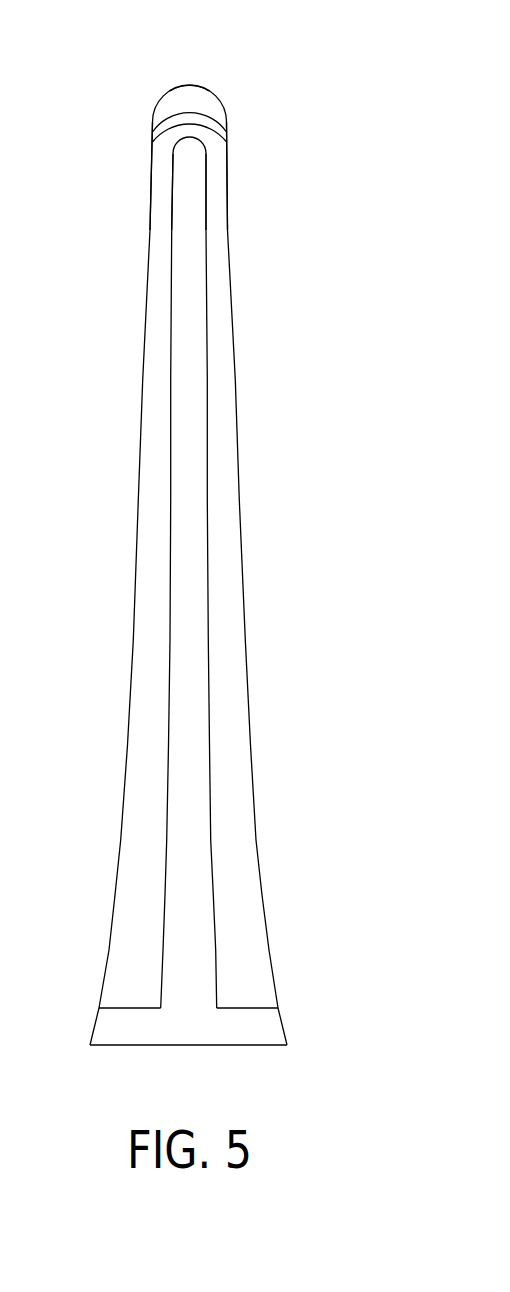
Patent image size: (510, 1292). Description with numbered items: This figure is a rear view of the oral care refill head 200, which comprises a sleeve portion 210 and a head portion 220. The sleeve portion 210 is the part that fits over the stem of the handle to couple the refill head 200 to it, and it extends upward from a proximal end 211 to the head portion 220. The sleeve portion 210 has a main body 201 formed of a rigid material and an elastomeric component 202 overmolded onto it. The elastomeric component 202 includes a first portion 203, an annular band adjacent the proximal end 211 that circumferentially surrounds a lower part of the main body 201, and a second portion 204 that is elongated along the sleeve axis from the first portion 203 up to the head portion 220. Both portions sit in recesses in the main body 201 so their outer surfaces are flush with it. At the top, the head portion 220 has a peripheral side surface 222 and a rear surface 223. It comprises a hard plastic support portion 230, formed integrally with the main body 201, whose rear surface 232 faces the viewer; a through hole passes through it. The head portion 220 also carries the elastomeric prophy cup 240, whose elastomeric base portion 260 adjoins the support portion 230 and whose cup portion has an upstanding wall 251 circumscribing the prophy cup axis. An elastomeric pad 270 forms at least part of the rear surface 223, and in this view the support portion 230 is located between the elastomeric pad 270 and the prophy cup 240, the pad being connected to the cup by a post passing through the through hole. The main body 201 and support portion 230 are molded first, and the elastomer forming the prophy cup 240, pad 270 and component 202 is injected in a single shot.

The oral care refill head 200 is at (318, 302).
The main body 201 is at (225, 640).
The elastomeric component 202 is at (195, 947).
The first portion 203 is at (255, 1029).
The second portion 204 is at (188, 412).
The sleeve portion 210 is at (222, 562).
The proximal end 211 is at (224, 1046).
The head portion 220 is at (137, 176).
The peripheral side surface 222 is at (224, 152).
The rear surface 223 is at (208, 162).
The support portion 230 is at (183, 134).
The rear surface 232 is at (198, 135).
The elastomeric prophy cup 240 is at (150, 97).
The upstanding wall 251 is at (203, 92).
The elastomeric base portion 260 is at (214, 108).
The elastomeric pad 270 is at (186, 153).